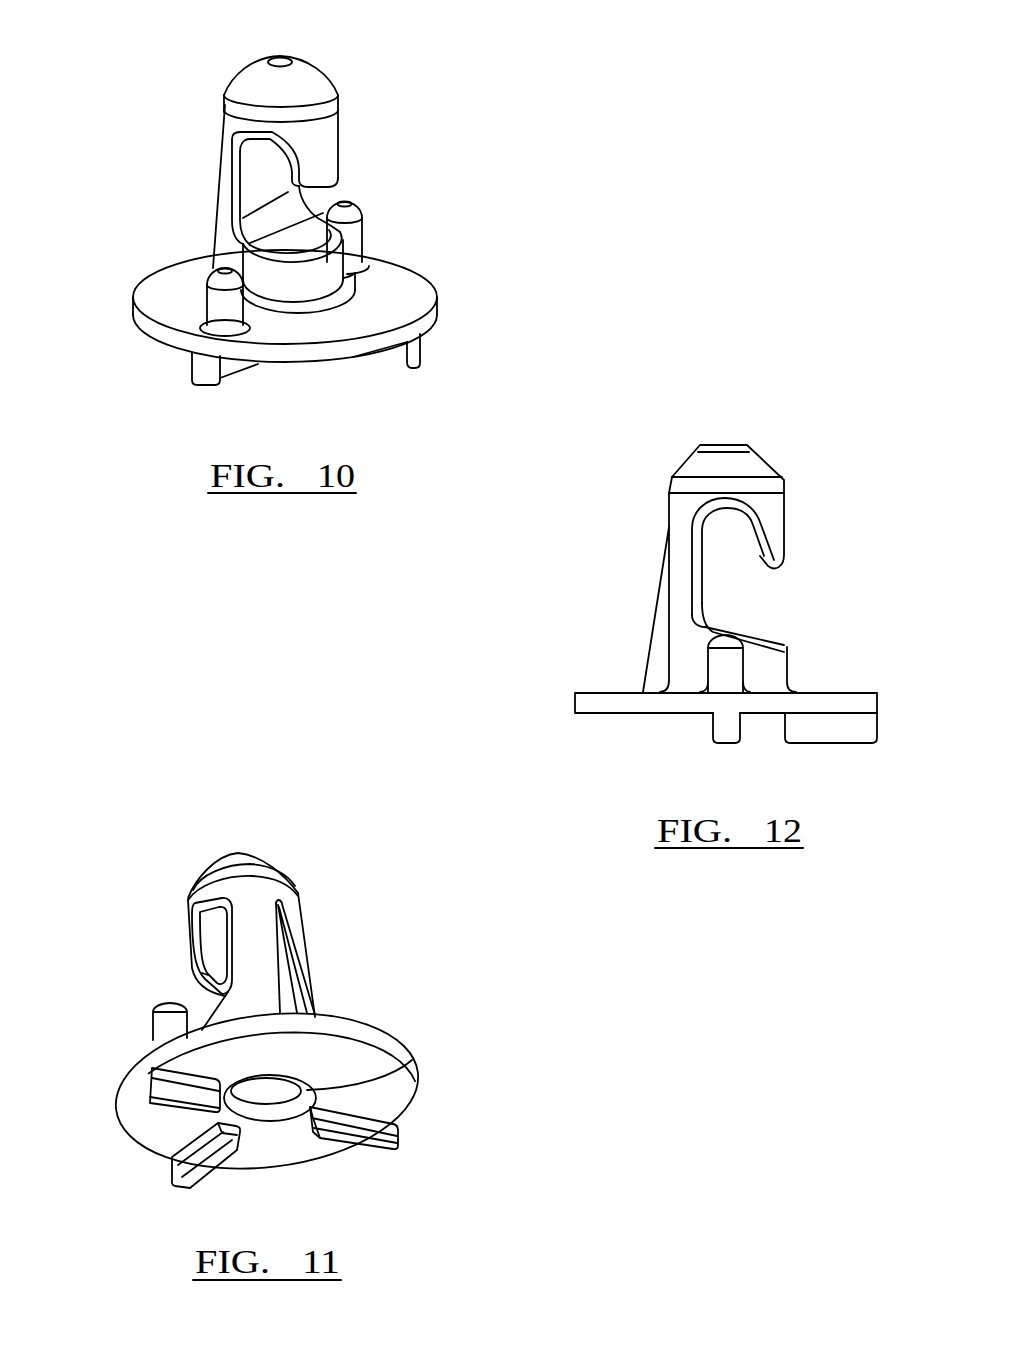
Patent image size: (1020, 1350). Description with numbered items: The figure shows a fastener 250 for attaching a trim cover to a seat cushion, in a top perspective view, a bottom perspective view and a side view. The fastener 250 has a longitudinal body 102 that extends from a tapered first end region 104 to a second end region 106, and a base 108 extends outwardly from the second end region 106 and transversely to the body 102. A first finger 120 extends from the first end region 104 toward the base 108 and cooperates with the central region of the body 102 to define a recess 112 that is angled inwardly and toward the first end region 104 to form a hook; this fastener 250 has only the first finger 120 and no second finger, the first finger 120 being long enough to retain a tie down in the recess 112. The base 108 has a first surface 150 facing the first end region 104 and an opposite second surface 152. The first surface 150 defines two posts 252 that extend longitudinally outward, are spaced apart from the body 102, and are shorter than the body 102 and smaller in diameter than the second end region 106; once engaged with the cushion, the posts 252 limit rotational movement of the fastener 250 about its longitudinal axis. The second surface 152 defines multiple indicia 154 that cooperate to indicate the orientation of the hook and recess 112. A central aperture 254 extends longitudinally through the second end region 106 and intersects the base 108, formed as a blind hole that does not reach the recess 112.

In FIG. 10, the fastener 250 is at (135, 61).
In FIG. 12, the fastener 250 is at (640, 503).
In FIG. 11, the fastener 250 is at (135, 862).
In FIG. 10, the first end region 104 is at (337, 73).
In FIG. 12, the first end region 104 is at (785, 467).
In FIG. 10, the first finger 120 is at (323, 151).
In FIG. 12, the first finger 120 is at (778, 535).
In FIG. 10, the post 252 is at (354, 236).
In FIG. 12, the post 252 is at (720, 667).
In FIG. 10, the base 108 is at (160, 290).
In FIG. 11, the base 108 is at (406, 1106).
In FIG. 10, the first surface 150 is at (417, 291).
In FIG. 12, the longitudinal body 102 is at (652, 578).
In FIG. 12, the recess 112 is at (762, 594).
In FIG. 12, the second end region 106 is at (807, 676).
In FIG. 11, the second surface 152 is at (340, 1058).
In FIG. 11, the central aperture 254 is at (412, 1060).
In FIG. 11, the indicia 154 is at (188, 1158).